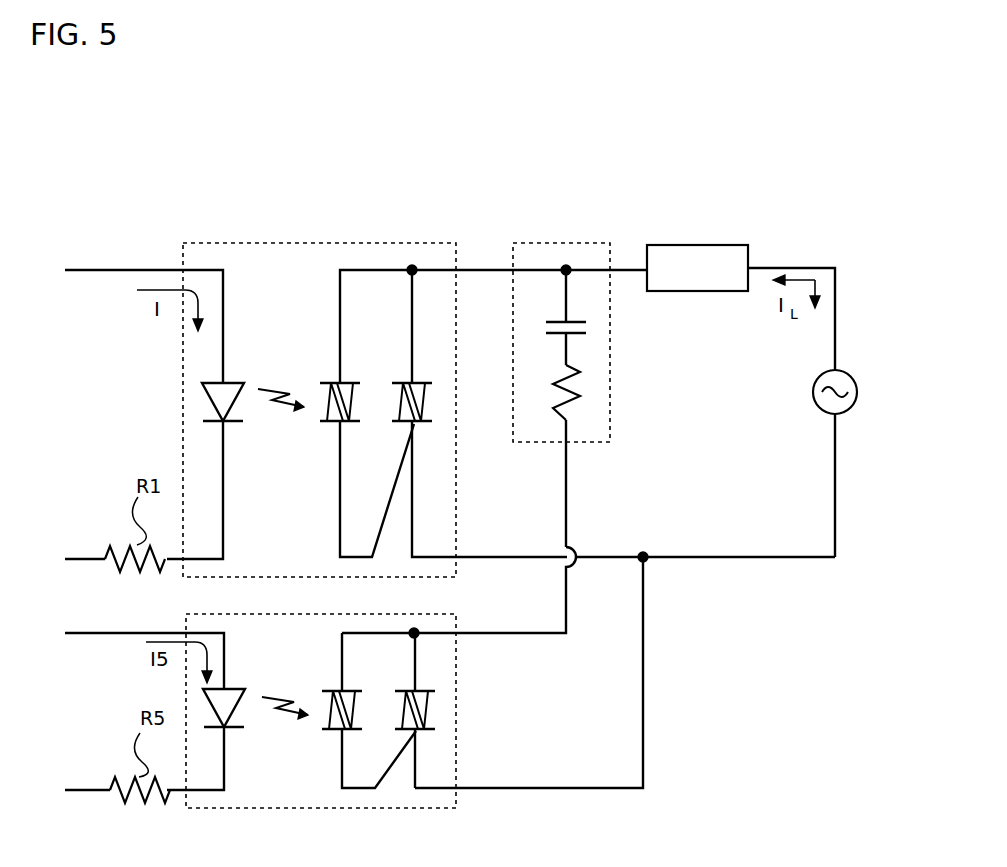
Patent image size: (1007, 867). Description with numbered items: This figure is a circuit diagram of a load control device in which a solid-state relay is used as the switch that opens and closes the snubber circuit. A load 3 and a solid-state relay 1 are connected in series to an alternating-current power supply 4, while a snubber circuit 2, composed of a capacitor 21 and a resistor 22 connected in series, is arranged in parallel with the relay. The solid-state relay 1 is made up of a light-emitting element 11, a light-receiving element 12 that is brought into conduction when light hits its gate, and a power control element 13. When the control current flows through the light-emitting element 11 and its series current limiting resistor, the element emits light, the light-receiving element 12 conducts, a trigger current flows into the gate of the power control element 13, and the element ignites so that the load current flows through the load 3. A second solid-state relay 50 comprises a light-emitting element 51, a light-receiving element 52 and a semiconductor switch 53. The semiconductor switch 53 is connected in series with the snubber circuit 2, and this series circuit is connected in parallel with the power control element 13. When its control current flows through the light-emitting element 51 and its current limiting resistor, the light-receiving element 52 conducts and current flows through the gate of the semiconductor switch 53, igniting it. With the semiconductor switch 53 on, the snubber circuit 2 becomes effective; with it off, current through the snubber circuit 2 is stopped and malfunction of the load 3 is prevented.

The solid-state relay 1 is at (323, 243).
The snubber circuit 2 is at (603, 243).
The load 3 is at (723, 244).
The alternating-current power supply 4 is at (813, 395).
The light-emitting element 11 is at (205, 396).
The light-receiving element 12 is at (333, 382).
The power control element 13 is at (405, 382).
The capacitor 21 is at (586, 328).
The resistor 22 is at (580, 390).
The solid-state relay 50 is at (356, 810).
The light-emitting element 51 is at (245, 718).
The light-receiving element 52 is at (333, 690).
The semiconductor switch 53 is at (408, 690).